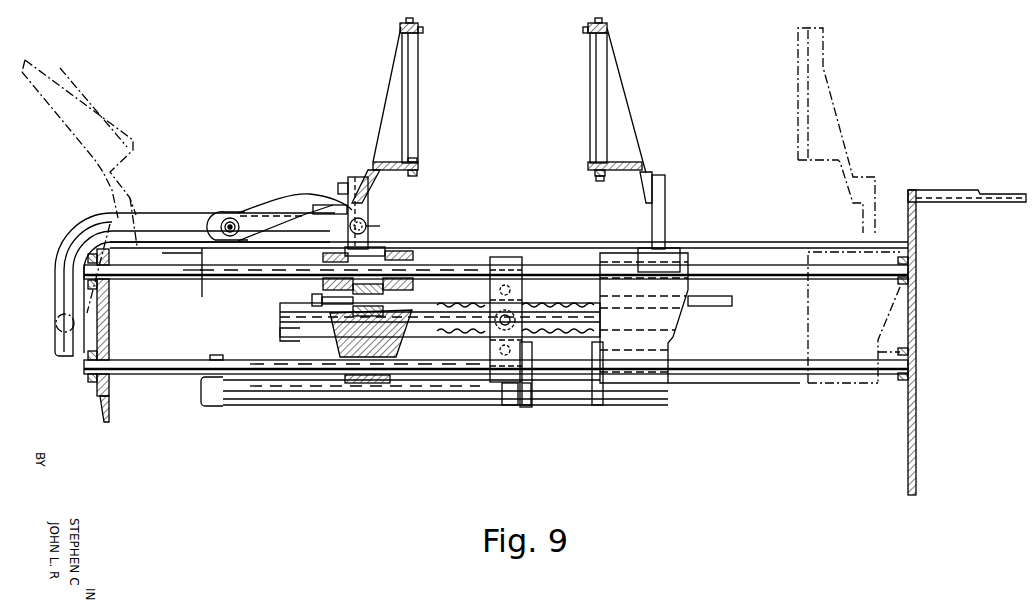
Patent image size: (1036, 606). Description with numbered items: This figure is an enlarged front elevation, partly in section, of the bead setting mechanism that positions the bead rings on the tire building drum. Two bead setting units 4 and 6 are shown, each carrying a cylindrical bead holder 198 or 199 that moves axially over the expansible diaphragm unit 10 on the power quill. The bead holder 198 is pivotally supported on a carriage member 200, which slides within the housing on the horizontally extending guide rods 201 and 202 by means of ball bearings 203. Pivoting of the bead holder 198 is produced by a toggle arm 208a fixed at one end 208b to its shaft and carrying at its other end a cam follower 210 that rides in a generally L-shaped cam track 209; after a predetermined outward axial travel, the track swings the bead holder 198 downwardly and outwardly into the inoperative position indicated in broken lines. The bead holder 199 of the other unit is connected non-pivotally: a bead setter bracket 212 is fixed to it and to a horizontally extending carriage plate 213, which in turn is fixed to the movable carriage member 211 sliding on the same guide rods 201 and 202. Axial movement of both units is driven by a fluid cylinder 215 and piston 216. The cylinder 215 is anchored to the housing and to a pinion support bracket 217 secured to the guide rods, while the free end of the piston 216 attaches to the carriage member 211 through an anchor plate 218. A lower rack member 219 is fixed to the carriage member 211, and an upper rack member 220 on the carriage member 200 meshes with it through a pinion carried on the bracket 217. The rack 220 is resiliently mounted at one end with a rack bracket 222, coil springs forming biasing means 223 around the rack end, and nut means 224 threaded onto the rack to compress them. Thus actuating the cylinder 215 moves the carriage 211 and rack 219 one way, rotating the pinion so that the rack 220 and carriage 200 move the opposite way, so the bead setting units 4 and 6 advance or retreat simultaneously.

The bead setting unit 4 is at (340, 176).
The bead setting unit 6 is at (668, 170).
The expansible diaphragm unit 10 is at (432, 228).
The cylindrical bead holder 198 is at (402, 44).
The cylindrical bead holder 199 is at (608, 50).
The carriage member 200 is at (373, 249).
The guide rod 201 is at (256, 270).
The guide rod 202 is at (180, 360).
The ball bearings 203 is at (395, 252).
The toggle arm 208a is at (288, 199).
The end of toggle arm 208b is at (366, 222).
The cam track 209 is at (178, 232).
The cam follower 210 is at (231, 222).
The carriage member 211 is at (538, 264).
The bead setter bracket 212 is at (668, 211).
The carriage plate 213 is at (675, 255).
The fluid cylinder 215 is at (262, 400).
The piston 216 is at (558, 386).
The pinion support bracket 217 is at (506, 256).
The anchor plate 218 is at (600, 400).
The lower rack member 219 is at (282, 333).
The upper rack member 220 is at (733, 301).
The rack bracket 222 is at (406, 312).
The biasing means 223 is at (324, 294).
The nut means 224 is at (320, 303).